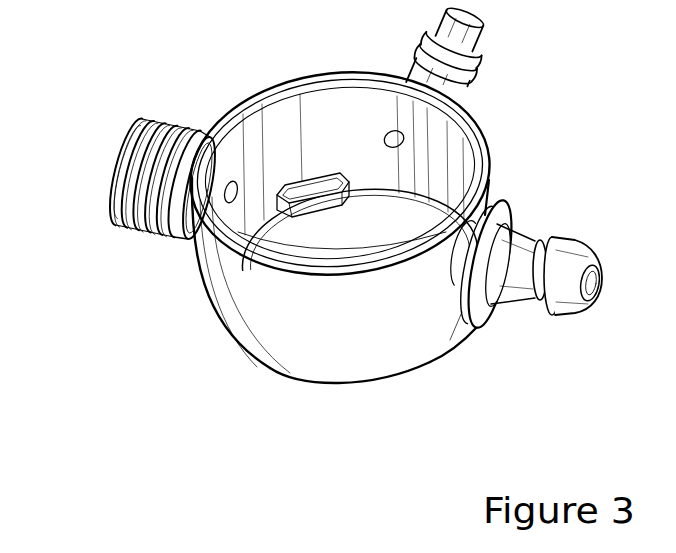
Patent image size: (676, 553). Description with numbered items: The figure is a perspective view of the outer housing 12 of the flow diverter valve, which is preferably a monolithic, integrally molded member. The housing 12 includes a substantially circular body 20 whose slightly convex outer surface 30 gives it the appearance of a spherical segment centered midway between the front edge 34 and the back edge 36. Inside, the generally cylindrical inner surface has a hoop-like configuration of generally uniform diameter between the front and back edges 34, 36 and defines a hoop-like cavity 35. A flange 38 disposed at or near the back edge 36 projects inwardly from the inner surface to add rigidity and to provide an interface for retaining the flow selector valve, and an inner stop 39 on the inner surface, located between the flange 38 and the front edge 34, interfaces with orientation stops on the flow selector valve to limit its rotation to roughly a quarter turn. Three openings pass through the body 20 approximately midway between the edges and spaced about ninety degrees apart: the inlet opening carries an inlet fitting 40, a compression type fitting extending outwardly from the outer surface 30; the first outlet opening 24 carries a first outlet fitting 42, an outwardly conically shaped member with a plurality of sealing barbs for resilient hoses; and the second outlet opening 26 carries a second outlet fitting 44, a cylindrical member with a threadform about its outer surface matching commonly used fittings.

The outer housing 12 is at (487, 171).
The body 20 is at (336, 388).
The first outlet opening 24 is at (408, 138).
The second outlet opening 26 is at (231, 180).
The outer surface 30 is at (218, 315).
The front edge 34 is at (321, 262).
The hoop-like cavity 35 is at (340, 113).
The back edge 36 is at (427, 365).
The flange 38 is at (358, 203).
The inner stop 39 is at (313, 172).
The inlet fitting 40 is at (577, 230).
The first outlet fitting 42 is at (487, 45).
The second outlet fitting 44 is at (103, 185).